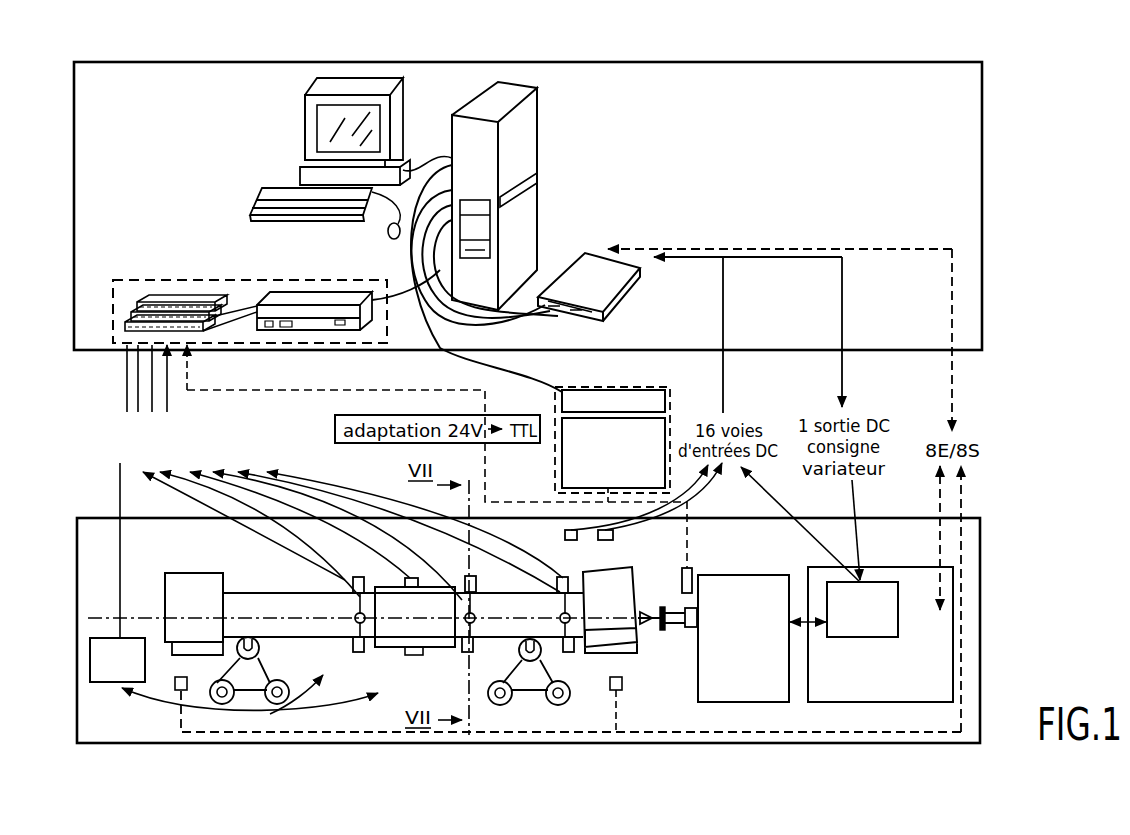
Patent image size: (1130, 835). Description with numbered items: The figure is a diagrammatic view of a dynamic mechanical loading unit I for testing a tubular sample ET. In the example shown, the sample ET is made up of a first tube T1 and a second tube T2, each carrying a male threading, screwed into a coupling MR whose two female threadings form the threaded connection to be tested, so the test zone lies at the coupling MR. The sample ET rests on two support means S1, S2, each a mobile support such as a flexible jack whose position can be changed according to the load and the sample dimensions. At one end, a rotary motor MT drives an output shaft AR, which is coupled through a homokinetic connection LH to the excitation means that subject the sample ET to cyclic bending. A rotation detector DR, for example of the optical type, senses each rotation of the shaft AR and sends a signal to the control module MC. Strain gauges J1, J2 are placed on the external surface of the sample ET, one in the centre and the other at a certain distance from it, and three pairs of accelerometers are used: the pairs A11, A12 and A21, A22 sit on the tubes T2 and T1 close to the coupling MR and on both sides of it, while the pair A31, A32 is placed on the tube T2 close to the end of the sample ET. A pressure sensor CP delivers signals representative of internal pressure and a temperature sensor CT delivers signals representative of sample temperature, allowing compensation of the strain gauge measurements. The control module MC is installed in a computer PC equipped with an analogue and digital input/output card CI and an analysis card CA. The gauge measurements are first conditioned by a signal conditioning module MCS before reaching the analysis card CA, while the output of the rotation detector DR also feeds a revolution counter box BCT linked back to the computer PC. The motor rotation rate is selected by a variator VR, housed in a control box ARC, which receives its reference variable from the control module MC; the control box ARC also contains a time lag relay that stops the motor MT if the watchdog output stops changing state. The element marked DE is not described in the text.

The unit I is at (56, 203).
The computer PC is at (305, 120).
The control module MC is at (536, 183).
The analogue and digital input/output card CI is at (618, 304).
The analysis card CA is at (185, 280).
The revolution counter box BCT is at (558, 405).
The signal conditioning module MCS is at (90, 665).
The tubular sample ET is at (180, 571).
The first tube T1 is at (255, 591).
The second tube T2 is at (474, 645).
The strain gauge J1 is at (350, 640).
The strain gauge J2 is at (462, 650).
The accelerometer A11 is at (477, 582).
The accelerometer A12 is at (463, 652).
The accelerometer A21 is at (352, 582).
The accelerometer A22 is at (355, 653).
The accelerometer A31 is at (565, 578).
The accelerometer A32 is at (568, 652).
The displacement sensor DE is at (405, 582).
The coupling MR is at (423, 656).
The homokinetic connection LH is at (647, 632).
The output shaft AR is at (680, 630).
The rotation detector DR is at (690, 568).
The rotary motor MT is at (752, 575).
The variator VR is at (878, 582).
The control box ARC is at (953, 657).
The pressure sensor CP is at (565, 535).
The temperature sensor CT is at (613, 535).
The support means S1 is at (247, 697).
The support means S2 is at (528, 700).